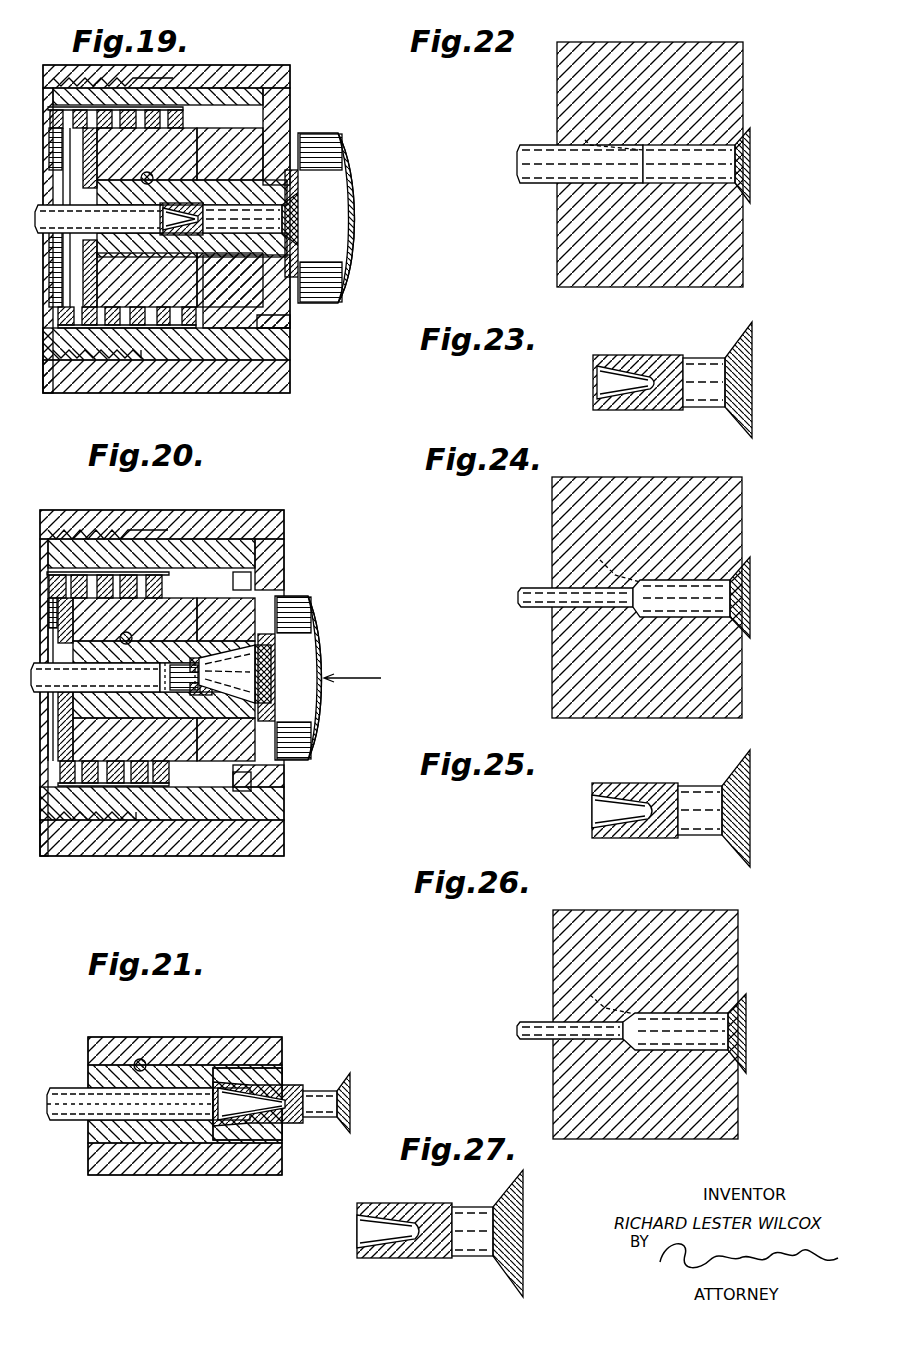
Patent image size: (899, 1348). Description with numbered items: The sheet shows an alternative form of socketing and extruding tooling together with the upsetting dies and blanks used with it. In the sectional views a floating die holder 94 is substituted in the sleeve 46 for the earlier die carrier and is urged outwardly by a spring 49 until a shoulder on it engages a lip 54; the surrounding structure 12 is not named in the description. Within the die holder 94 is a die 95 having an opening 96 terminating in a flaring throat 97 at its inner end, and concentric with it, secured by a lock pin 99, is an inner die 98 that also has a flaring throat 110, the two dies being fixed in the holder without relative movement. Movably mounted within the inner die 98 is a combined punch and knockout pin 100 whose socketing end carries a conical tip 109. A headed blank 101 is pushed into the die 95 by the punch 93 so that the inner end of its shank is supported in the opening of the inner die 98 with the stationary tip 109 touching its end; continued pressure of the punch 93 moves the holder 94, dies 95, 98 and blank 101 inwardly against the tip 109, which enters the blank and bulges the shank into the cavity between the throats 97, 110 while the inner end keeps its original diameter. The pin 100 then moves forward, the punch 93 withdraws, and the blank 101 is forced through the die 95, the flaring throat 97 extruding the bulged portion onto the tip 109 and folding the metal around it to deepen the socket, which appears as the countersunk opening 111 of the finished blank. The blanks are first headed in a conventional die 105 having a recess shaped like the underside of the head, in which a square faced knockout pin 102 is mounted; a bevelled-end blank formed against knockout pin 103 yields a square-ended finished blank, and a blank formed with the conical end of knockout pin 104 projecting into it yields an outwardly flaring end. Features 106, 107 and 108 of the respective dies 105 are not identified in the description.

In FIG. 19, the housing block 12 is at (272, 72).
In FIG. 20, the housing block 12 is at (251, 517).
In FIG. 19, the sleeve 46 is at (255, 94).
In FIG. 20, the sleeve 46 is at (262, 550).
In FIG. 19, the spring 49 is at (55, 118).
In FIG. 20, the spring 49 is at (52, 580).
In FIG. 19, the lip 54 is at (265, 322).
In FIG. 20, the lip 54 is at (259, 782).
In FIG. 19, the punch 93 is at (335, 148).
In FIG. 20, the punch 93 is at (302, 614).
In FIG. 19, the floating die holder 94 is at (105, 160).
In FIG. 20, the floating die holder 94 is at (78, 610).
In FIG. 21, the floating die holder 94 is at (178, 1042).
In FIG. 19, the die 95 is at (270, 252).
In FIG. 20, the die 95 is at (277, 765).
In FIG. 21, the die 95 is at (250, 1147).
In FIG. 19, the opening 96 is at (295, 172).
In FIG. 20, the opening 96 is at (270, 649).
In FIG. 21, the opening 96 is at (283, 1063).
In FIG. 19, the flaring throat 97 is at (250, 192).
In FIG. 20, the flaring throat 97 is at (226, 645).
In FIG. 21, the flaring throat 97 is at (237, 1084).
In FIG. 19, the inner die 98 is at (95, 190).
In FIG. 20, the inner die 98 is at (73, 658).
In FIG. 21, the inner die 98 is at (100, 1042).
In FIG. 19, the lock pin 99 is at (146, 176).
In FIG. 20, the lock pin 99 is at (120, 640).
In FIG. 21, the lock pin 99 is at (138, 1060).
In FIG. 19, the combined punch and knockout pin 100 is at (50, 228).
In FIG. 20, the combined punch and knockout pin 100 is at (56, 681).
In FIG. 21, the combined punch and knockout pin 100 is at (70, 1095).
In FIG. 19, the blank 101 is at (273, 220).
In FIG. 20, the blank 101 is at (248, 676).
In FIG. 21, the blank 101 is at (318, 1122).
In FIG. 22, the blank 101 is at (742, 162).
In FIG. 23, the blank 101 is at (696, 358).
In FIG. 24, the blank 101 is at (718, 594).
In FIG. 25, the blank 101 is at (715, 812).
In FIG. 26, the blank 101 is at (715, 1031).
In FIG. 27, the blank 101 is at (483, 1230).
In FIG. 22, the knockout pin 102 is at (550, 165).
In FIG. 24, the knockout pin 103 is at (548, 597).
In FIG. 26, the knockout pin 104 is at (536, 1032).
In FIG. 22, the die 105 is at (720, 84).
In FIG. 24, the die 105 is at (712, 514).
In FIG. 26, the die 105 is at (715, 936).
In FIG. 22, the bore 106 is at (578, 126).
In FIG. 24, the bore 107 is at (620, 585).
In FIG. 26, the bore 108 is at (609, 1010).
In FIG. 19, the conical tip 109 is at (180, 215).
In FIG. 20, the conical tip 109 is at (182, 681).
In FIG. 21, the conical tip 109 is at (295, 1092).
In FIG. 20, the flaring throat 110 is at (194, 640).
In FIG. 21, the flaring throat 110 is at (210, 1070).
In FIG. 23, the tapered socket 111 is at (600, 364).